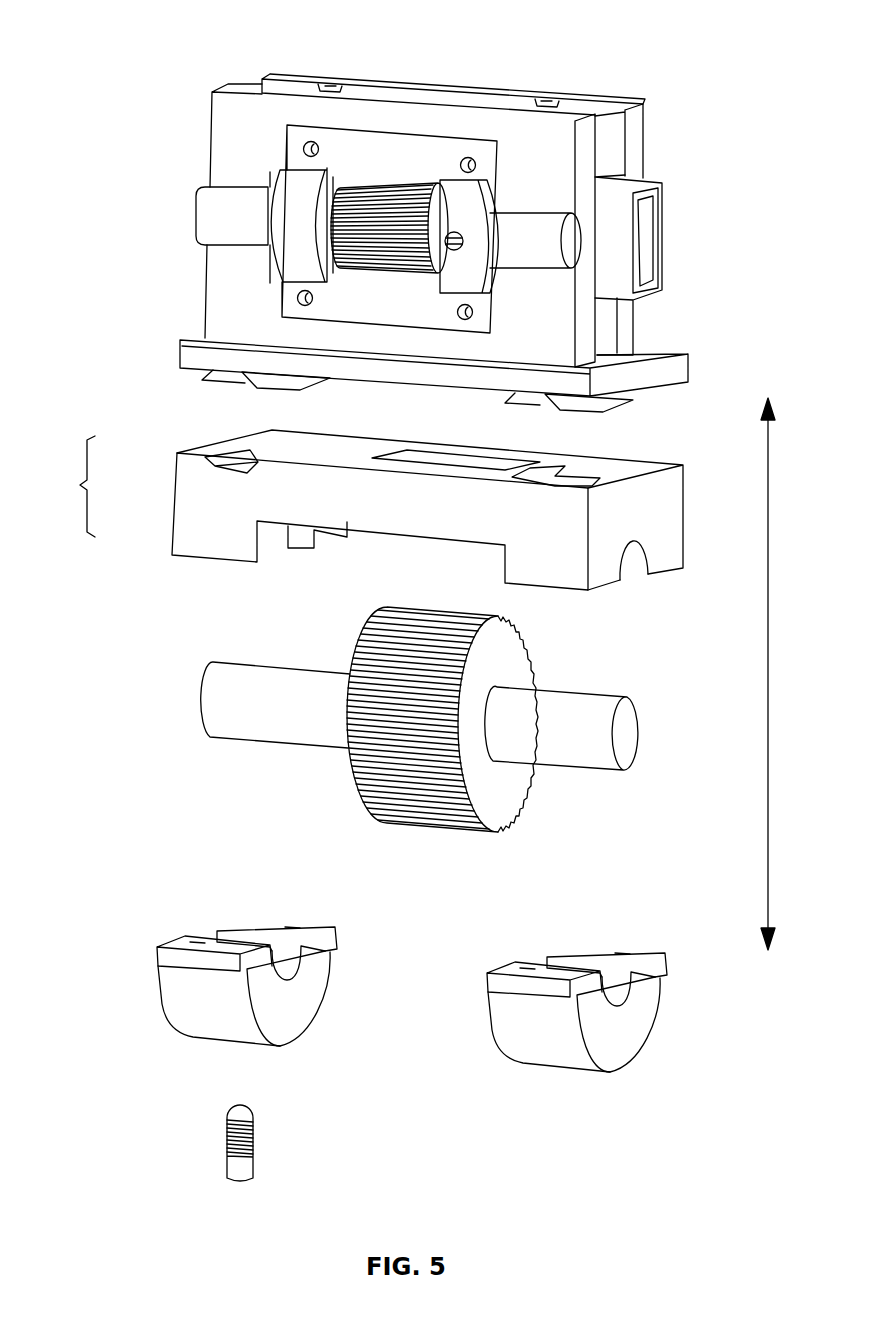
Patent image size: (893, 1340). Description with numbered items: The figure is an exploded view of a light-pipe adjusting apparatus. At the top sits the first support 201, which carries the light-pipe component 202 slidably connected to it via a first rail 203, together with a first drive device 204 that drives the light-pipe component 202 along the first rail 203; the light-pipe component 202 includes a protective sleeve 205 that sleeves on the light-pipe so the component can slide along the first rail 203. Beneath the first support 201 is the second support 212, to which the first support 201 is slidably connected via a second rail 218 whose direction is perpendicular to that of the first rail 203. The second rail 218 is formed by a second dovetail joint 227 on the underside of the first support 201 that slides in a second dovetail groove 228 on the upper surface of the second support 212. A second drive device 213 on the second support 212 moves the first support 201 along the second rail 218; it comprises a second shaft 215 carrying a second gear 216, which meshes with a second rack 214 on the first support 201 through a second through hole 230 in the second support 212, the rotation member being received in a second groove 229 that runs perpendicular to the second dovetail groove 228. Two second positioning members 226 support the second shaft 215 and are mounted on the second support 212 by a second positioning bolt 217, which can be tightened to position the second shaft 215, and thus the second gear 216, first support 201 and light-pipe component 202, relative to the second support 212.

The first support 201 is at (436, 188).
The light-pipe component 202 is at (643, 245).
The first rail 203 is at (338, 90).
The first drive device 204 is at (420, 188).
The protective sleeve 205 is at (617, 282).
The second support 212 is at (419, 553).
The second drive device 213 is at (419, 790).
The second rack 214 is at (415, 383).
The second shaft 215 is at (295, 733).
The second gear 216 is at (430, 803).
The second positioning bolt 217 is at (252, 1150).
The second rail 218 is at (67, 486).
The second positioning member 226 is at (288, 1015).
The second dovetail joint 227 is at (222, 385).
The second dovetail groove 228 is at (243, 463).
The second groove 229 is at (630, 567).
The second through hole 230 is at (483, 455).